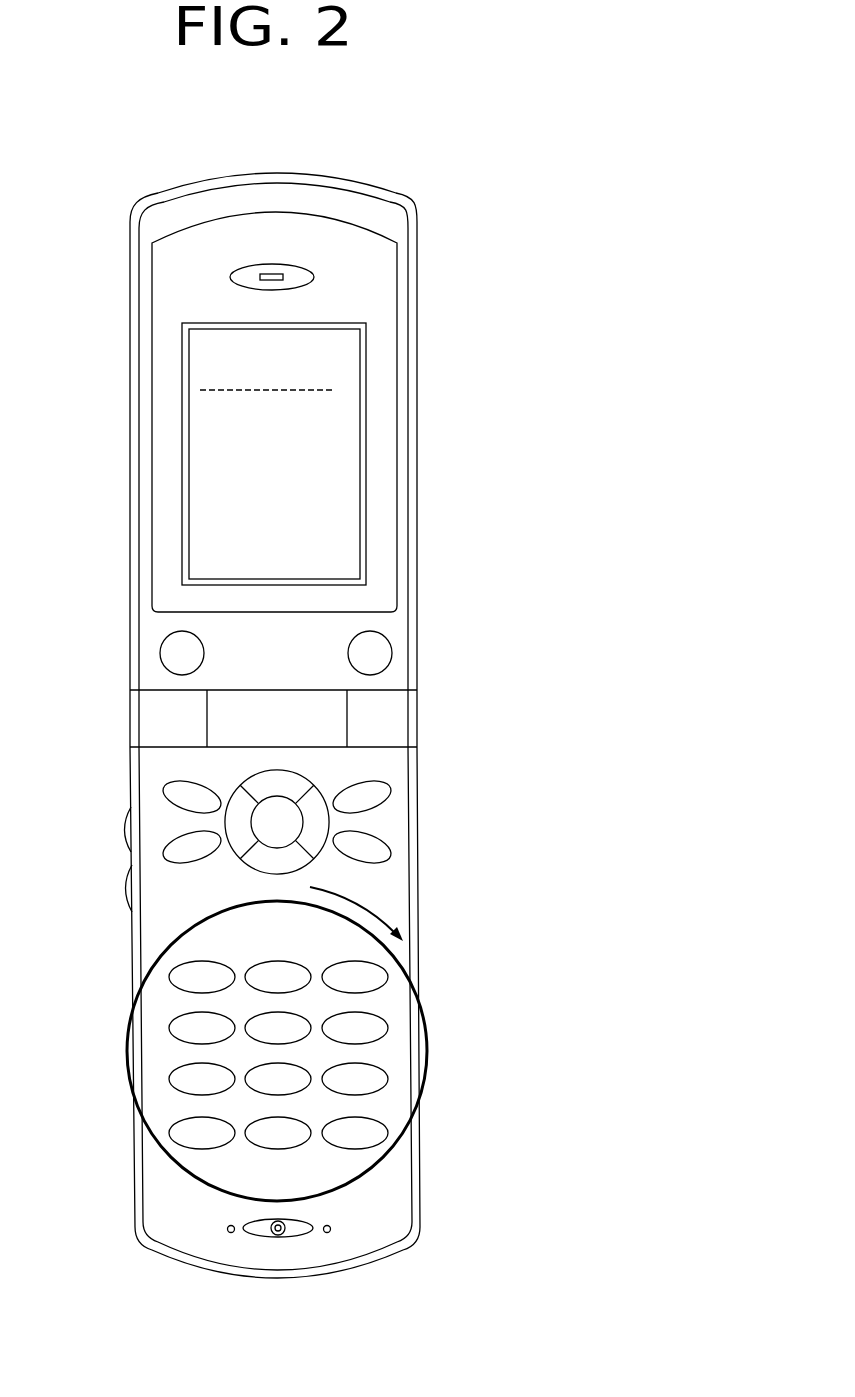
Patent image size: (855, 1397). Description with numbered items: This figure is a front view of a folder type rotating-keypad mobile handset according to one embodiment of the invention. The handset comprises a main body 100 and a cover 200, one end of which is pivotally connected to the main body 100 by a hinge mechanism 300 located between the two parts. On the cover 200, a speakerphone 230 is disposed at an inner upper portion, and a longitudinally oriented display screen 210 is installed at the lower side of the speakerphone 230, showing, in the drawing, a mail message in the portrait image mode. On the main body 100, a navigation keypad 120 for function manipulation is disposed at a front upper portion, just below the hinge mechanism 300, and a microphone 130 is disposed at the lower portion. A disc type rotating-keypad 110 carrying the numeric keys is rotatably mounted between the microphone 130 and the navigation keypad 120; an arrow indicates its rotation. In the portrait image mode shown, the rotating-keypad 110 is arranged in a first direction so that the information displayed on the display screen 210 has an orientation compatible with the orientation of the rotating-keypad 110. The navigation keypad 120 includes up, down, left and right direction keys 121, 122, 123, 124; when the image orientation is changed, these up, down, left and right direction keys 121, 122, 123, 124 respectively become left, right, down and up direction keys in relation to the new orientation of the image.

The main body 100 is at (422, 1120).
The rotating-keypad 110 is at (408, 1043).
The navigation keypad 120 is at (280, 826).
The up direction key 121 is at (267, 783).
The down direction key 122 is at (277, 860).
The left direction key 123 is at (237, 822).
The right direction key 124 is at (315, 803).
The microphone 130 is at (280, 1235).
The cover 200 is at (417, 335).
The display screen 210 is at (366, 415).
The speakerphone 230 is at (313, 275).
The hinge mechanism 300 is at (440, 718).